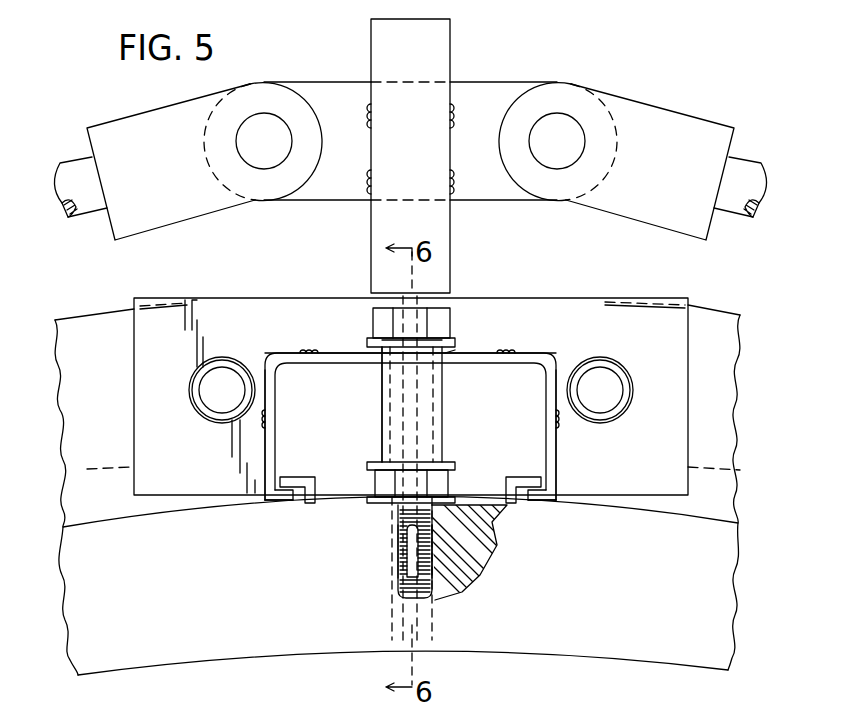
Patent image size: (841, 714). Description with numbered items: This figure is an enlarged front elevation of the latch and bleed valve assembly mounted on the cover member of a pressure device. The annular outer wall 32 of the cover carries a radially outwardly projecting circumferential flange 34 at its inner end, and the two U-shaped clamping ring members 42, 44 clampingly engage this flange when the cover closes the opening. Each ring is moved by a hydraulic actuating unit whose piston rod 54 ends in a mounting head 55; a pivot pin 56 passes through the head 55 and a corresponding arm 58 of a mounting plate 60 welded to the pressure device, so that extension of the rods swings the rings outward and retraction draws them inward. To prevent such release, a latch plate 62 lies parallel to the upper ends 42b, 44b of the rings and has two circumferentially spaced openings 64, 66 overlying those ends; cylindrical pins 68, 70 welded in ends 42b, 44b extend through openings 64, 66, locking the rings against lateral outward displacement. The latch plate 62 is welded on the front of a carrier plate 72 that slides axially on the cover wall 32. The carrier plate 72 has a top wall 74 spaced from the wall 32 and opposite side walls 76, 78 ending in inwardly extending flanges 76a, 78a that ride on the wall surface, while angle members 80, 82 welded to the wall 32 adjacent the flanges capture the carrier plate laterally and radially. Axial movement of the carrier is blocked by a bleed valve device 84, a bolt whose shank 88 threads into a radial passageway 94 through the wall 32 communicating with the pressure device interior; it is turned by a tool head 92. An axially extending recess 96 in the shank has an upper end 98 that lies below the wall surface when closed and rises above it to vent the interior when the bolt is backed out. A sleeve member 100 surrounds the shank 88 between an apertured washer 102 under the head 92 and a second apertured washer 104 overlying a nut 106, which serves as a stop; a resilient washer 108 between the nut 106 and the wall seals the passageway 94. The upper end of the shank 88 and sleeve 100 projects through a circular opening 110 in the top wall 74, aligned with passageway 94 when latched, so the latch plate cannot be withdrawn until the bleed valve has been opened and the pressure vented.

The annular outer wall 32 is at (566, 648).
The circumferential flange 34 is at (735, 480).
The clamping ring member 42 is at (713, 322).
The upper end of clamping ring member 42b is at (462, 296).
The clamping ring member 44 is at (93, 320).
The upper end of clamping ring member 44b is at (365, 296).
The piston rod 54 is at (72, 162).
The mounting head 55 is at (148, 120).
The pivot pin 56 is at (272, 118).
The arm 58 is at (337, 88).
The mounting plate 60 is at (445, 32).
The latch plate 62 is at (285, 308).
The opening 64 is at (592, 362).
The opening 66 is at (218, 377).
The cylindrical pin 68 is at (607, 378).
The cylindrical pin 70 is at (227, 367).
The carrier plate 72 is at (550, 323).
The top wall 74 is at (517, 366).
The side wall 76 is at (557, 462).
The inwardly extending flange 76a is at (545, 505).
The side wall 78 is at (262, 445).
The inwardly extending flange 78a is at (280, 505).
The angle member 80 is at (515, 478).
The angle member 82 is at (318, 452).
The bleed valve device 84 is at (364, 321).
The shank portion 88 is at (425, 405).
The tool head 92 is at (442, 324).
The radial passageway 94 is at (398, 592).
The axially extending recess 96 is at (412, 560).
The upper end of recess 98 is at (400, 540).
The sleeve member 100 is at (382, 386).
The apertured washer 102 is at (367, 343).
The apertured washer 104 is at (370, 462).
The nut 106 is at (447, 476).
The resilient washer 108 is at (376, 501).
The circular opening 110 is at (452, 353).